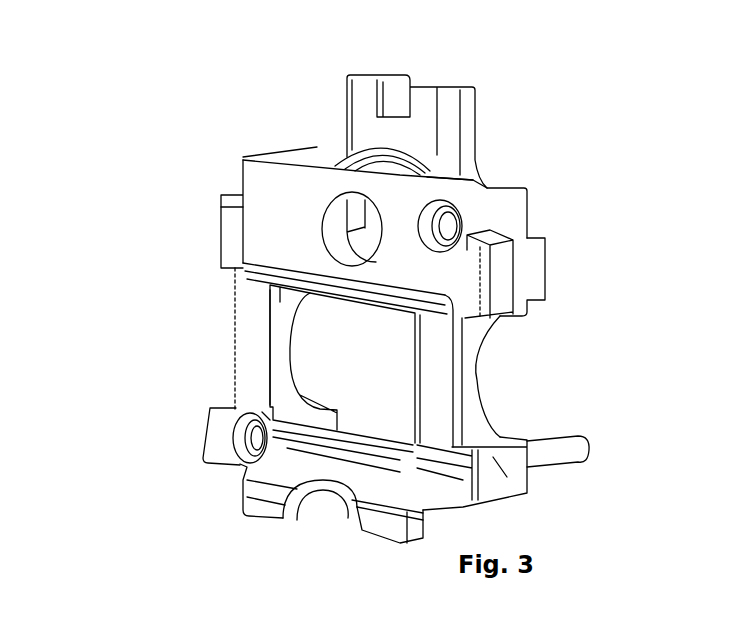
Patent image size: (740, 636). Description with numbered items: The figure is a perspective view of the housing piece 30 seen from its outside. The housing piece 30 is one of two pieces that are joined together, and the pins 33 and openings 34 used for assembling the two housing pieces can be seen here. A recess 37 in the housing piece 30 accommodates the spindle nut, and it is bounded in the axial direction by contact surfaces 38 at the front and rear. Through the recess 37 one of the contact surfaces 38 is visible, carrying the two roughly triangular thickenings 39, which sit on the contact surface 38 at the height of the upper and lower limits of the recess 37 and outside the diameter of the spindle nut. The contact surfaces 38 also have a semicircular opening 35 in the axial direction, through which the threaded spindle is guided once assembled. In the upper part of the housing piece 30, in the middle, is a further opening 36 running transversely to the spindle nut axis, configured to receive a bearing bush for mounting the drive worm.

The housing piece 30 is at (518, 89).
The pins 33 is at (567, 452).
The openings 34 is at (446, 221).
The semicircular opening 35 is at (500, 380).
The opening 36 is at (352, 215).
The recess 37 is at (303, 343).
The contact surfaces 38 is at (278, 360).
The thickenings 39 is at (256, 412).